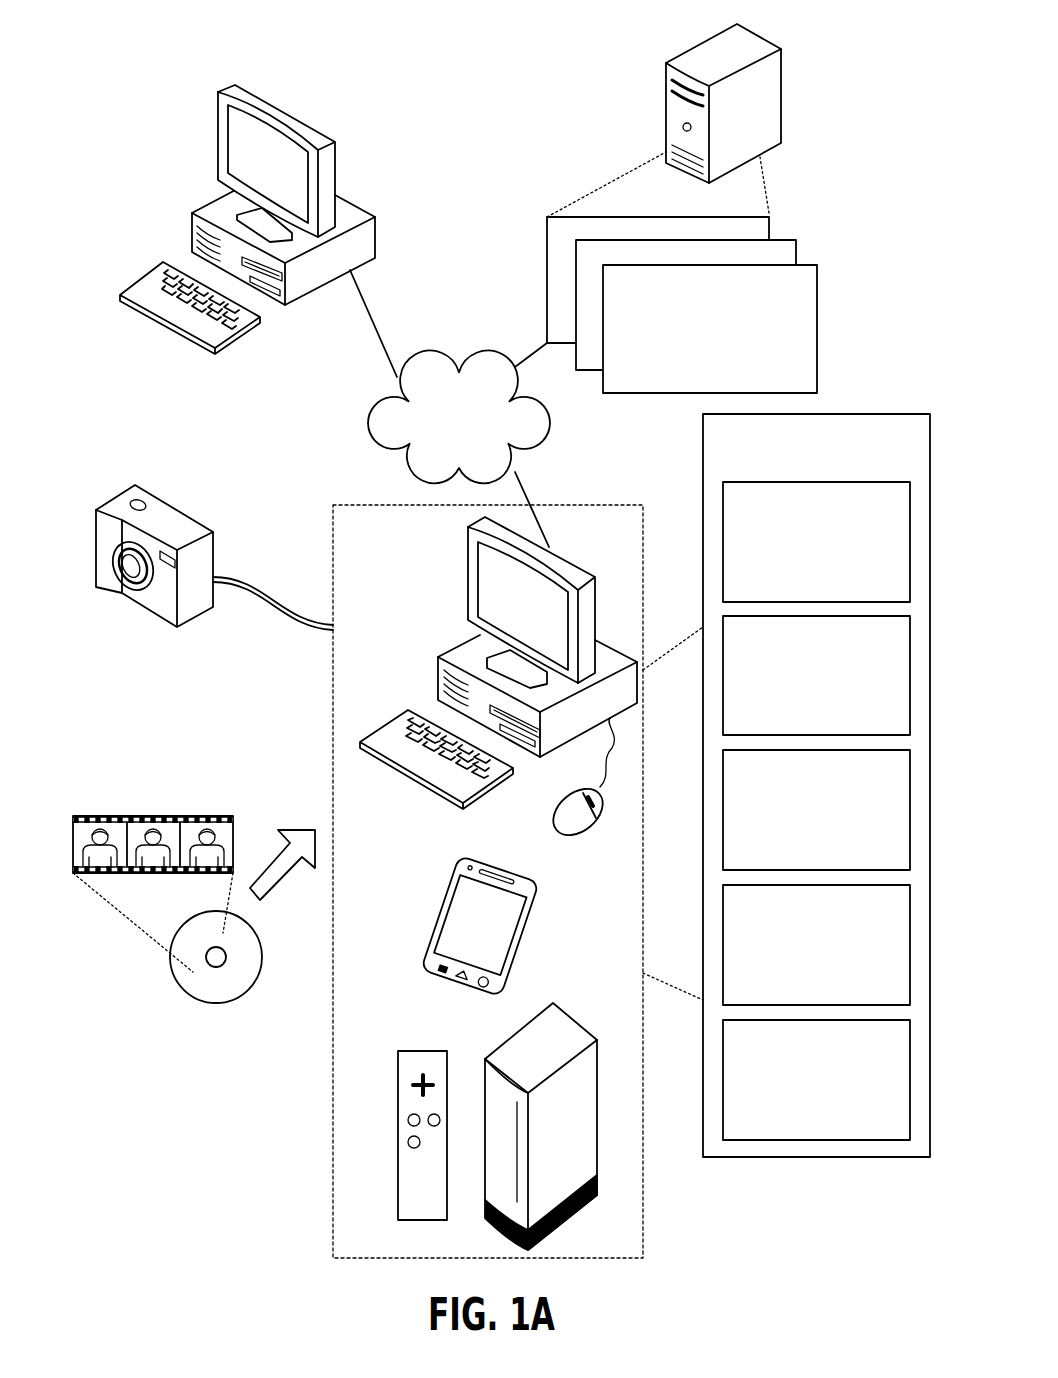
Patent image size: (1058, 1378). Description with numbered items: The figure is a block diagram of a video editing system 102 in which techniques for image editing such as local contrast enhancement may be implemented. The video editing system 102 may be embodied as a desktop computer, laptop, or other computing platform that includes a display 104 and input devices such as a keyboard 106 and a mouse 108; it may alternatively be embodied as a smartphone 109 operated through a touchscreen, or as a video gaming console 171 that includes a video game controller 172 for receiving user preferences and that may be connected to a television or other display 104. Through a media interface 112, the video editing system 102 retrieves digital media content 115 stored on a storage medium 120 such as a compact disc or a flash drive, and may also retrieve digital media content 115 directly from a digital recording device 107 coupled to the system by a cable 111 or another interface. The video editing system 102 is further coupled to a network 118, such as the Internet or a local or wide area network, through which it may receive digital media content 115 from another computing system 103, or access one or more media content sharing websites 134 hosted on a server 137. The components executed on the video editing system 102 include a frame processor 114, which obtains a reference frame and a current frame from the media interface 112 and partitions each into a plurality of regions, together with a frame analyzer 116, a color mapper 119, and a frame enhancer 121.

The video editing system 102 is at (874, 474).
The computing system 103 is at (218, 107).
The display 104 is at (467, 582).
The keyboard 106 is at (422, 783).
The digital recording device 107 is at (117, 493).
The mouse 108 is at (557, 828).
The smartphone 109 is at (447, 887).
The cable 111 is at (243, 583).
The media interface 112 is at (801, 583).
The frame processor 114 is at (801, 717).
The digital media content 115 is at (162, 792).
The frame analyzer 116 is at (801, 851).
The network 118 is at (443, 447).
The color mapper 119 is at (801, 971).
The storage medium 120 is at (263, 952).
The frame enhancer 121 is at (801, 1121).
The media content sharing websites 134 is at (695, 383).
The server 137 is at (692, 45).
The video gaming console 171 is at (510, 1036).
The video game controller 172 is at (398, 1072).